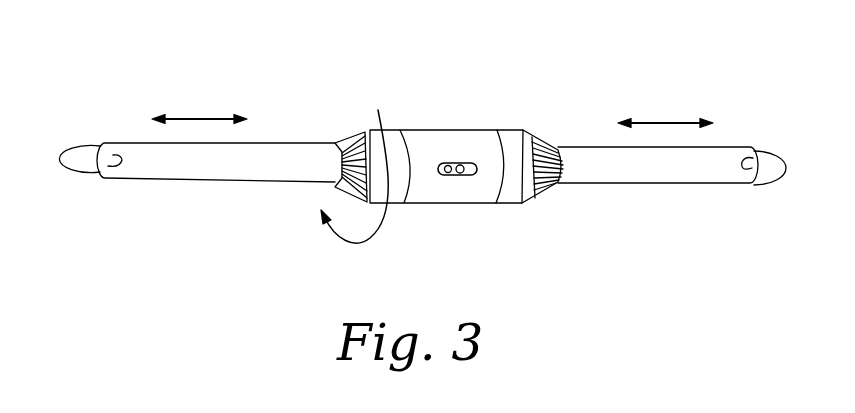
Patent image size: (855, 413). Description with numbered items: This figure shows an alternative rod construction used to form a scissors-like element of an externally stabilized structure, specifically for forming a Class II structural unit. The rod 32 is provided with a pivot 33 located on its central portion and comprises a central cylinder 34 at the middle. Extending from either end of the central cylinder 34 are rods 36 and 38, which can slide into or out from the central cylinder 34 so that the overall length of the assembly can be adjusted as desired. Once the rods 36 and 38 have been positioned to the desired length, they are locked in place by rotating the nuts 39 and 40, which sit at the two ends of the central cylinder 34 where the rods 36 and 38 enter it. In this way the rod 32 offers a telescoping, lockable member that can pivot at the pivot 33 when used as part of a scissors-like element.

The rod 32 is at (500, 101).
The pivot 33 is at (457, 173).
The central cylinder 34 is at (425, 128).
The rod 36 is at (677, 184).
The rod 38 is at (230, 181).
The nut 39 is at (540, 198).
The nut 40 is at (349, 137).